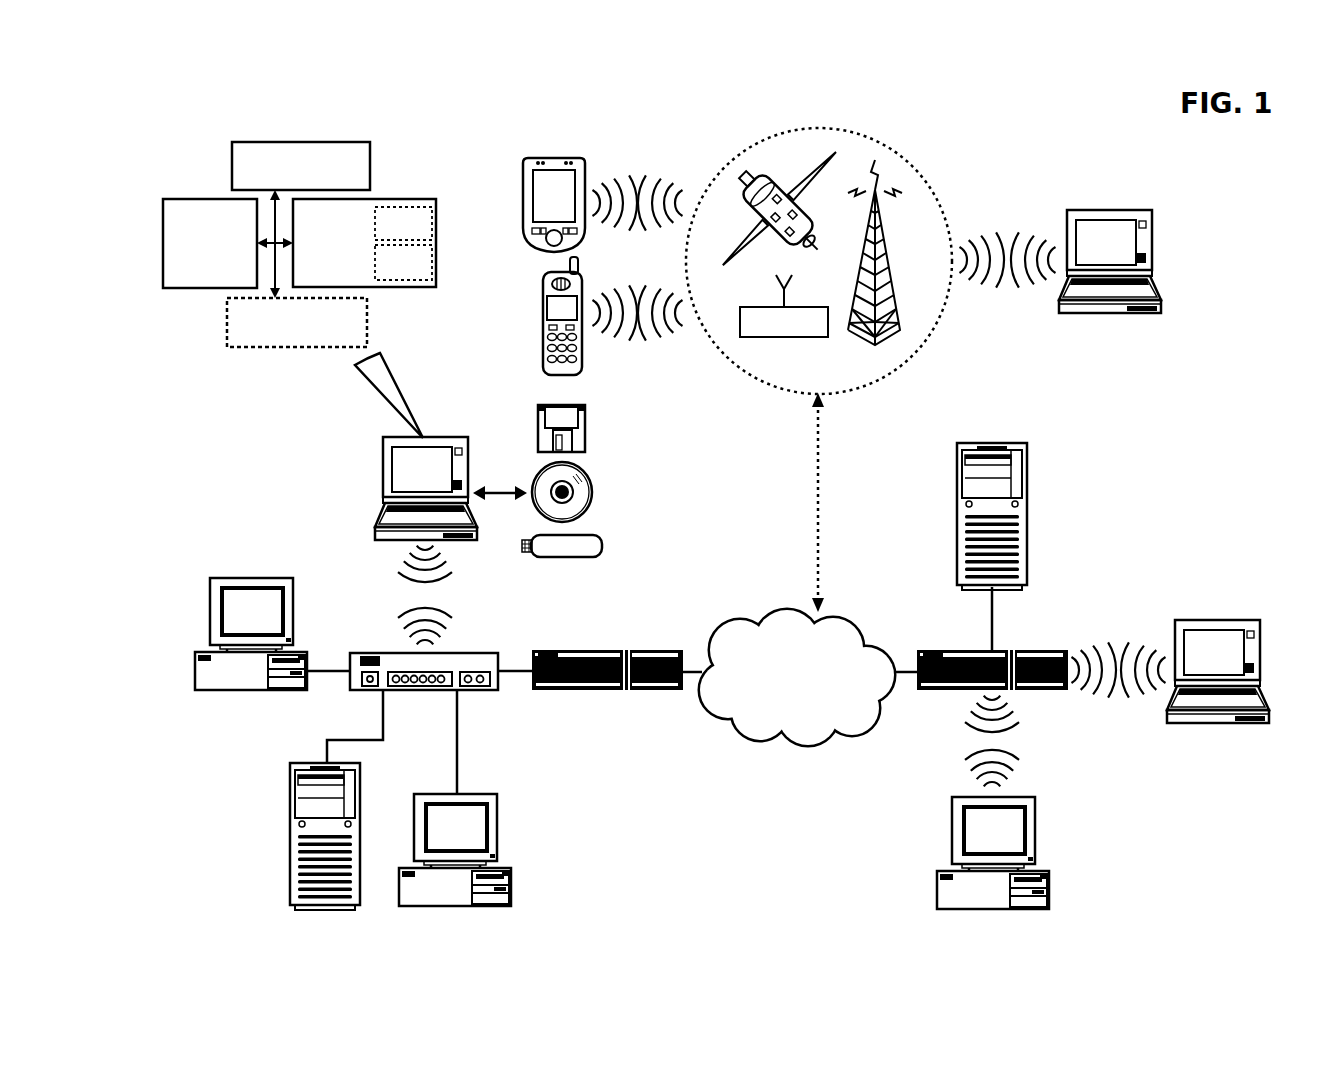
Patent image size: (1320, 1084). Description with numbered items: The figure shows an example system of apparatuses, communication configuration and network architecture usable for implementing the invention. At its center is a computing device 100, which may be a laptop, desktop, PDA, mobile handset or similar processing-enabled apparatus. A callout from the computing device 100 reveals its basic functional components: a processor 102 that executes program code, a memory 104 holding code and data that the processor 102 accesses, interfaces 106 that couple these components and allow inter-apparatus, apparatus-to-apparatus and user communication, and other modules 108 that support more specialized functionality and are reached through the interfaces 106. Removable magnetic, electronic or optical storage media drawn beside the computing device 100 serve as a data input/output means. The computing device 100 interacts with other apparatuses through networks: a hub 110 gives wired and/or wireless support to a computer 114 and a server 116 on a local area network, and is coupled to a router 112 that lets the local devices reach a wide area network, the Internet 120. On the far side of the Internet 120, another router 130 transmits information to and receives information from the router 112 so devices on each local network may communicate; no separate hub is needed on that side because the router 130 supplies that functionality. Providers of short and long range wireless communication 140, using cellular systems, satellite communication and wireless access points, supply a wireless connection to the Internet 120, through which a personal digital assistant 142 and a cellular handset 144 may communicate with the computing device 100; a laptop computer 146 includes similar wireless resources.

The computing device 100 is at (407, 477).
The processor 102 is at (210, 243).
The memory 104 is at (364, 243).
The interfaces 106 is at (301, 166).
The other modules 108 is at (297, 322).
The hub 110 is at (434, 644).
The router 112 is at (616, 643).
The computer 114 is at (232, 634).
The server 116 is at (302, 836).
The Internet 120 is at (791, 698).
The router 130 is at (996, 643).
The wireless communication 140 is at (837, 255).
The personal digital assistant 142 is at (531, 201).
The cellular handset 144 is at (540, 316).
The laptop computer 146 is at (1131, 249).